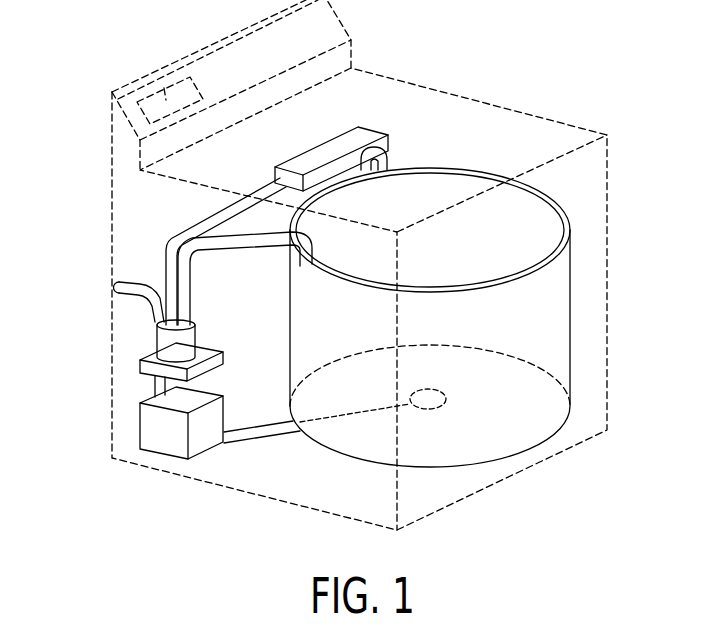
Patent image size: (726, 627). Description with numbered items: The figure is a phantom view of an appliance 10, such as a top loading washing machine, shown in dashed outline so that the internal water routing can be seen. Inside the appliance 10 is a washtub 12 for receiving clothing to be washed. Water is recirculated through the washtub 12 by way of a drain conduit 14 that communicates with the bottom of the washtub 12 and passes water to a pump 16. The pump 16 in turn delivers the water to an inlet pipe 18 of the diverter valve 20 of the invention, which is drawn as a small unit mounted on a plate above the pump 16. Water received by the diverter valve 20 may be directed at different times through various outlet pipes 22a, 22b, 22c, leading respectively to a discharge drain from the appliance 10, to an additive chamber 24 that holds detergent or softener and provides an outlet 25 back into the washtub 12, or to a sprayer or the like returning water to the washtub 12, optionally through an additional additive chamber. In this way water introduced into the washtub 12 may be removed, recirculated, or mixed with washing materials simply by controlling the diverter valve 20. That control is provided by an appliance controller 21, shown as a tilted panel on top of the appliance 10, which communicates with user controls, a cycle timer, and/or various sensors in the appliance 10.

The appliance 10 is at (594, 95).
The washtub 12 is at (535, 208).
The drain conduit 14 is at (447, 408).
The pump 16 is at (150, 422).
The inlet pipe 18 is at (157, 385).
The diverter valve 20 is at (132, 355).
The appliance controller 21 is at (152, 78).
The outlet pipe 22a is at (143, 295).
The outlet pipe 22b is at (167, 265).
The outlet pipe 22c is at (227, 237).
The additive chamber 24 is at (363, 137).
The outlet 25 is at (393, 157).